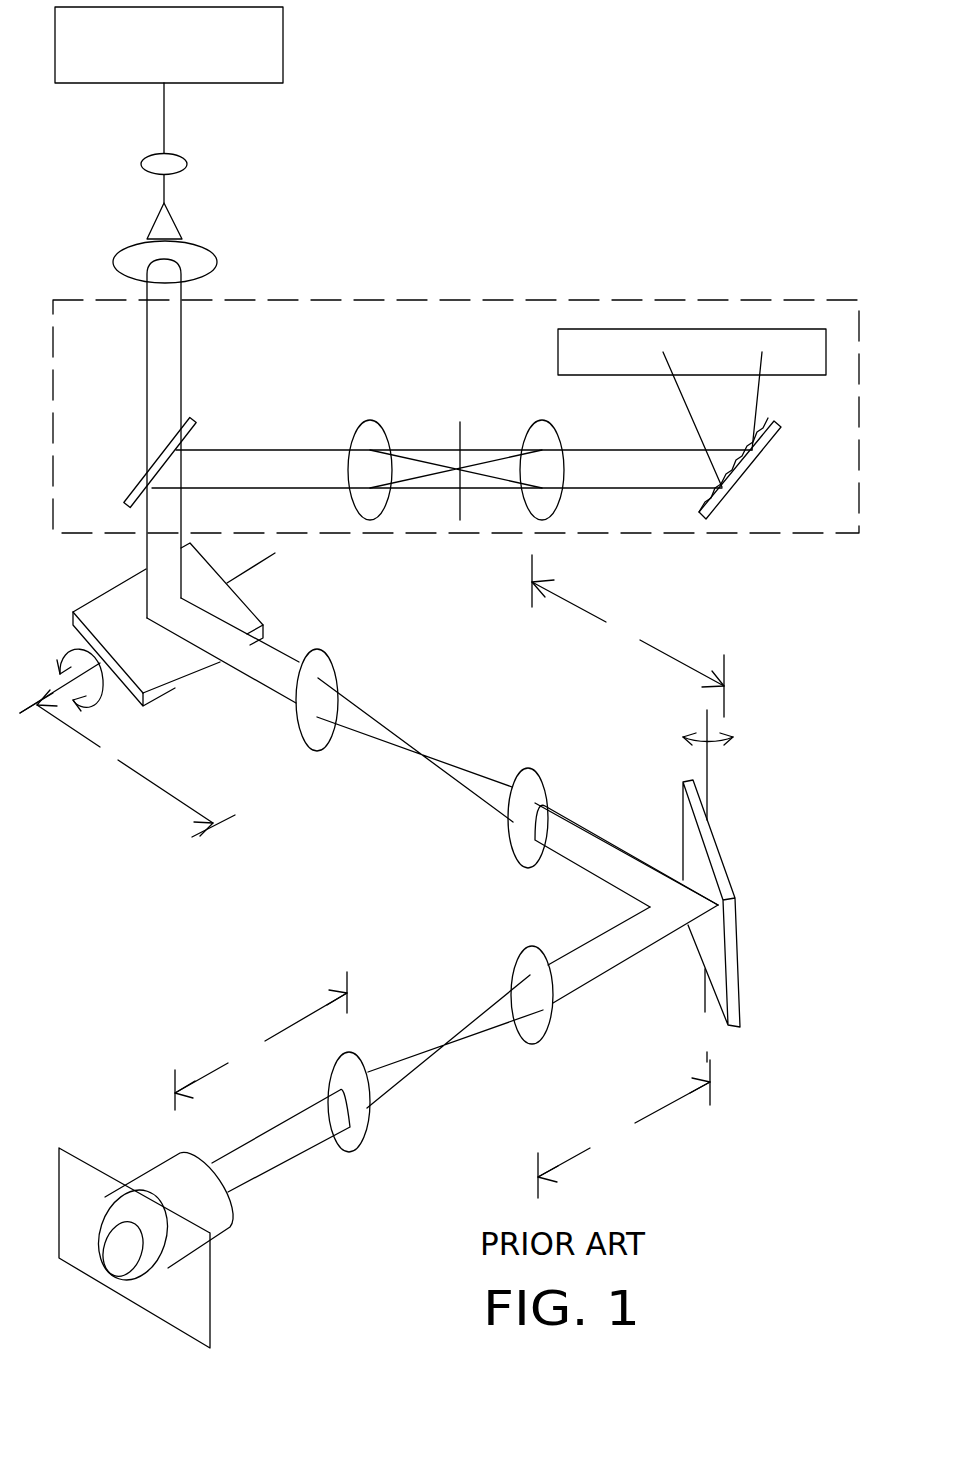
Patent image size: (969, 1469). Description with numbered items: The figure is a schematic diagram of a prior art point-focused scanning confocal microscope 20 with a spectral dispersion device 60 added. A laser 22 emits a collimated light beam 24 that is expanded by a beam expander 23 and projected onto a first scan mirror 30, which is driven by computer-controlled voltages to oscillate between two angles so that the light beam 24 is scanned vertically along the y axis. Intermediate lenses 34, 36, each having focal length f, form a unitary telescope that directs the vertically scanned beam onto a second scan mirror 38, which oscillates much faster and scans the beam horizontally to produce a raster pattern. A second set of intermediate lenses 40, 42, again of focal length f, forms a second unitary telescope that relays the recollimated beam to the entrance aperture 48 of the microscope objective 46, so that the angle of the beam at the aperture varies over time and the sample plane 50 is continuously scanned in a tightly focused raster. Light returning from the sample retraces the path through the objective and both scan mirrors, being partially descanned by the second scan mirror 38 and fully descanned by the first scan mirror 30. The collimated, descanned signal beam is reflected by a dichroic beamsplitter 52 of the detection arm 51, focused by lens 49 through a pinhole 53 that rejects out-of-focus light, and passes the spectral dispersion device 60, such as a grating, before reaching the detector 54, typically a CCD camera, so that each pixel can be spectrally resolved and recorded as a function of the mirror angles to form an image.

The confocal microscope 20 is at (521, 160).
The laser 22 is at (284, 50).
The beam expander 23 is at (211, 154).
The light beam 24 is at (182, 362).
The first scan mirror 30 is at (160, 670).
The intermediate lens 34 is at (312, 750).
The intermediate lens 36 is at (512, 850).
The second scan mirror 38 is at (735, 880).
The intermediate lens 40 is at (530, 1047).
The intermediate lens 42 is at (366, 1130).
The microscope objective 46 is at (110, 1277).
The entrance aperture 48 is at (233, 1210).
The sample plane 50 is at (190, 1306).
The lens 49 is at (372, 421).
The detection arm 51 is at (623, 300).
The dichroic beamsplitter 52 is at (130, 490).
The pinhole 53 is at (460, 437).
The detector 54 is at (558, 348).
The spectral dispersion device 60 is at (768, 447).